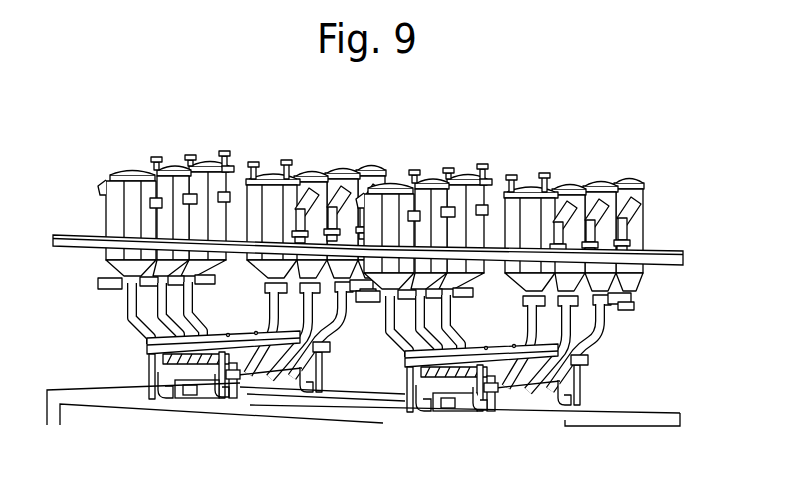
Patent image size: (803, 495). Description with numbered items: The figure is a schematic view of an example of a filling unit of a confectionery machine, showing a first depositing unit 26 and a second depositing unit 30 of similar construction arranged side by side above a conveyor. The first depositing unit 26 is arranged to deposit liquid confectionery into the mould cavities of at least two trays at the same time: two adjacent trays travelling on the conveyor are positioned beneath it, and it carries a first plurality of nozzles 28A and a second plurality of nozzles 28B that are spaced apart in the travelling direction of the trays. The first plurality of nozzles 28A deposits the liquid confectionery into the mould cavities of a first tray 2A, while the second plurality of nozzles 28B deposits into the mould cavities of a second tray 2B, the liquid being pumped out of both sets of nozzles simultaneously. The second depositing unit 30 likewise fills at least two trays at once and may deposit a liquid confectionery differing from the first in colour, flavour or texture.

The first depositing unit 26 is at (239, 140).
The second depositing unit 30 is at (501, 145).
The first plurality of nozzles 28A is at (173, 397).
The first tray 2A is at (197, 398).
The second plurality of nozzles 28B is at (243, 393).
The second tray 2B is at (257, 398).